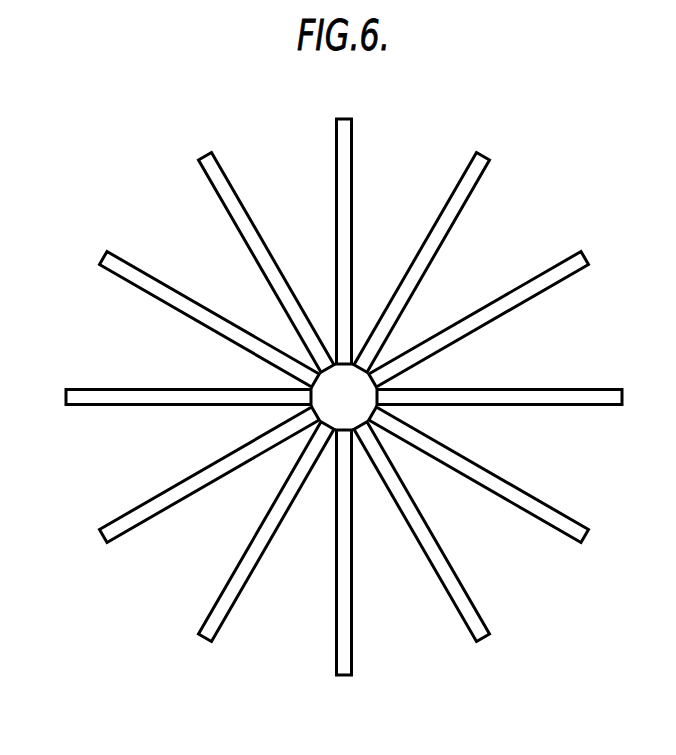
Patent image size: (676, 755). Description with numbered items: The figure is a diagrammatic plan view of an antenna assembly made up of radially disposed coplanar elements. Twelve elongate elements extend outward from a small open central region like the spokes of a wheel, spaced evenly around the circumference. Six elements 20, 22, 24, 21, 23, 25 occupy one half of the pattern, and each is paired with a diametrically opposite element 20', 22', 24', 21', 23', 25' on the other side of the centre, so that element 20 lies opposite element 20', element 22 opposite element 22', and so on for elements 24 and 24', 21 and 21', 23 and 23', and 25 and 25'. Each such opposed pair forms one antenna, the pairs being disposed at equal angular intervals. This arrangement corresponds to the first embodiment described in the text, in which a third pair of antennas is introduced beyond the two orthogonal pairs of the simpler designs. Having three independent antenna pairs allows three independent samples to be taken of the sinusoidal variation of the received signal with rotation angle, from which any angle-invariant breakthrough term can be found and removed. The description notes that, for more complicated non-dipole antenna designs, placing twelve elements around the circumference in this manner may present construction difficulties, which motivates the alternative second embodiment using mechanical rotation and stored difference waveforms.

The radial element 20 is at (340, 222).
The radial element 22 is at (440, 250).
The radial element 24 is at (499, 309).
The radial element 21 is at (521, 394).
The radial element 23 is at (499, 486).
The radial element 25 is at (439, 551).
The opposite radial element 20' is at (347, 580).
The opposite radial element 22' is at (240, 551).
The opposite radial element 24' is at (183, 484).
The opposite radial element 21' is at (166, 392).
The opposite radial element 23' is at (184, 308).
The opposite radial element 25' is at (242, 250).